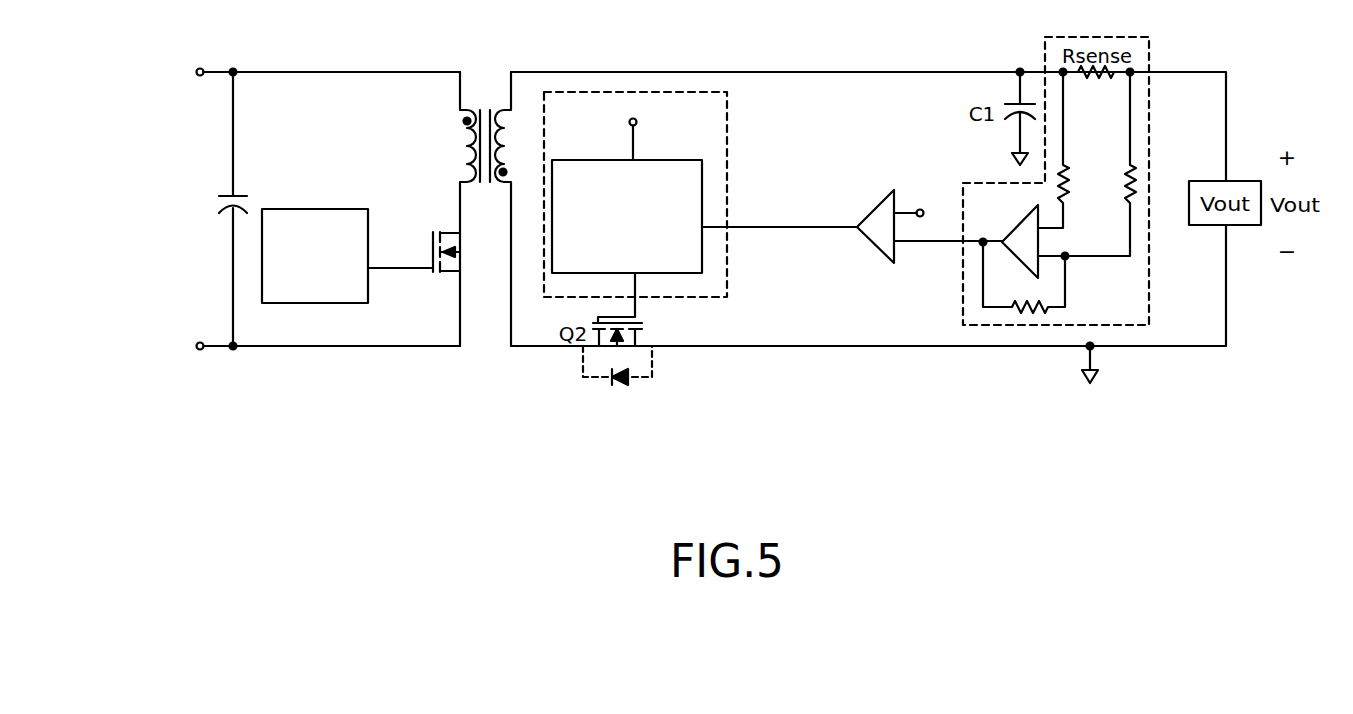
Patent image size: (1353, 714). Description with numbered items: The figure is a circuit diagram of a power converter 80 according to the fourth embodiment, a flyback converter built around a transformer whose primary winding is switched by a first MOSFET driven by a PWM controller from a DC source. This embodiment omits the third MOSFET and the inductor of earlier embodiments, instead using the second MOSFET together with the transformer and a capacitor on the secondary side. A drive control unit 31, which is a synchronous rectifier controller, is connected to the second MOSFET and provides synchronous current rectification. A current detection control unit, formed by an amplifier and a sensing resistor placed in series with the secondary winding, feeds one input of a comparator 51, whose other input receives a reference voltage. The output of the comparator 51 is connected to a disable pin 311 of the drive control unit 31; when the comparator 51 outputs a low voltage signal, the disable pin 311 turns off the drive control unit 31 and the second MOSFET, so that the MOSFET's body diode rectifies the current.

The power converter 80 is at (318, 400).
The drive control unit 31 is at (680, 160).
The disable pin 311 is at (717, 228).
The comparator 51 is at (873, 247).